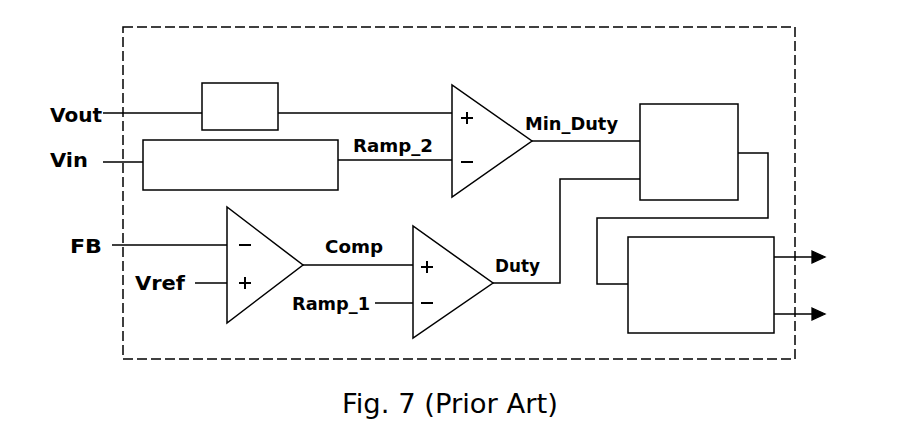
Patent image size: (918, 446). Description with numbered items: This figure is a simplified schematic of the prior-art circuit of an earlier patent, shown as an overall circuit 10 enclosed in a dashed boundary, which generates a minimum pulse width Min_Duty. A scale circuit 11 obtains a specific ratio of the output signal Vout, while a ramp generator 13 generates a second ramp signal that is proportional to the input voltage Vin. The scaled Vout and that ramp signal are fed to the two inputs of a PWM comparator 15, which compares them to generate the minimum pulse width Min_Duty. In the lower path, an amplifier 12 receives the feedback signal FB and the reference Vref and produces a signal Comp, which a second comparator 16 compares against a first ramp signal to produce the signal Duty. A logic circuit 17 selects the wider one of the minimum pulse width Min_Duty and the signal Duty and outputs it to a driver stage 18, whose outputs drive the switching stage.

The switching regulator control circuit (prior art) 10 is at (771, 75).
The scale circuit 11 is at (276, 91).
The error amplifier 12 is at (283, 252).
The ramp generator 13 is at (332, 177).
The PWM comparator 15 is at (490, 110).
The PWM comparator 16 is at (457, 252).
The logic circuit 17 is at (701, 193).
The driver stage 18 is at (716, 312).